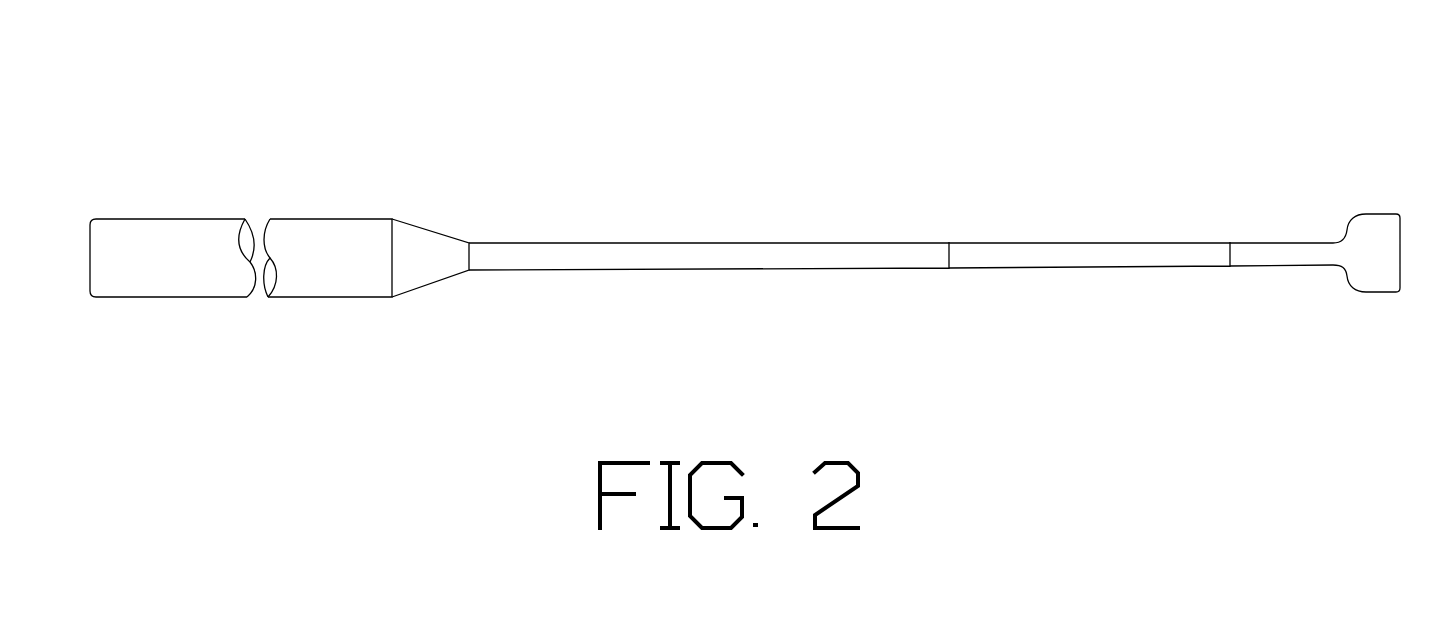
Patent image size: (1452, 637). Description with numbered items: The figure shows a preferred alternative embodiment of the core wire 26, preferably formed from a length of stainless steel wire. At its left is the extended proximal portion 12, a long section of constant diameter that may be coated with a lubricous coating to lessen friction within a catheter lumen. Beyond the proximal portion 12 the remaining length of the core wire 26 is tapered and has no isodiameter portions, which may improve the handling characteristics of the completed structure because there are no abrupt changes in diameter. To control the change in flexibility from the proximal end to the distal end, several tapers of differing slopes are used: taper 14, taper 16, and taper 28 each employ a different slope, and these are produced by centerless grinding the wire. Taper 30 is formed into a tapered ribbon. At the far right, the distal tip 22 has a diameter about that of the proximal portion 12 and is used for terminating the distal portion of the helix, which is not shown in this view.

The core wire 26 is at (667, 80).
The proximal portion 12 is at (326, 232).
The taper 14 is at (422, 240).
The taper 16 is at (715, 253).
The taper 28 is at (1043, 253).
The taper 30 is at (1240, 252).
The distal tip 22 is at (1390, 232).